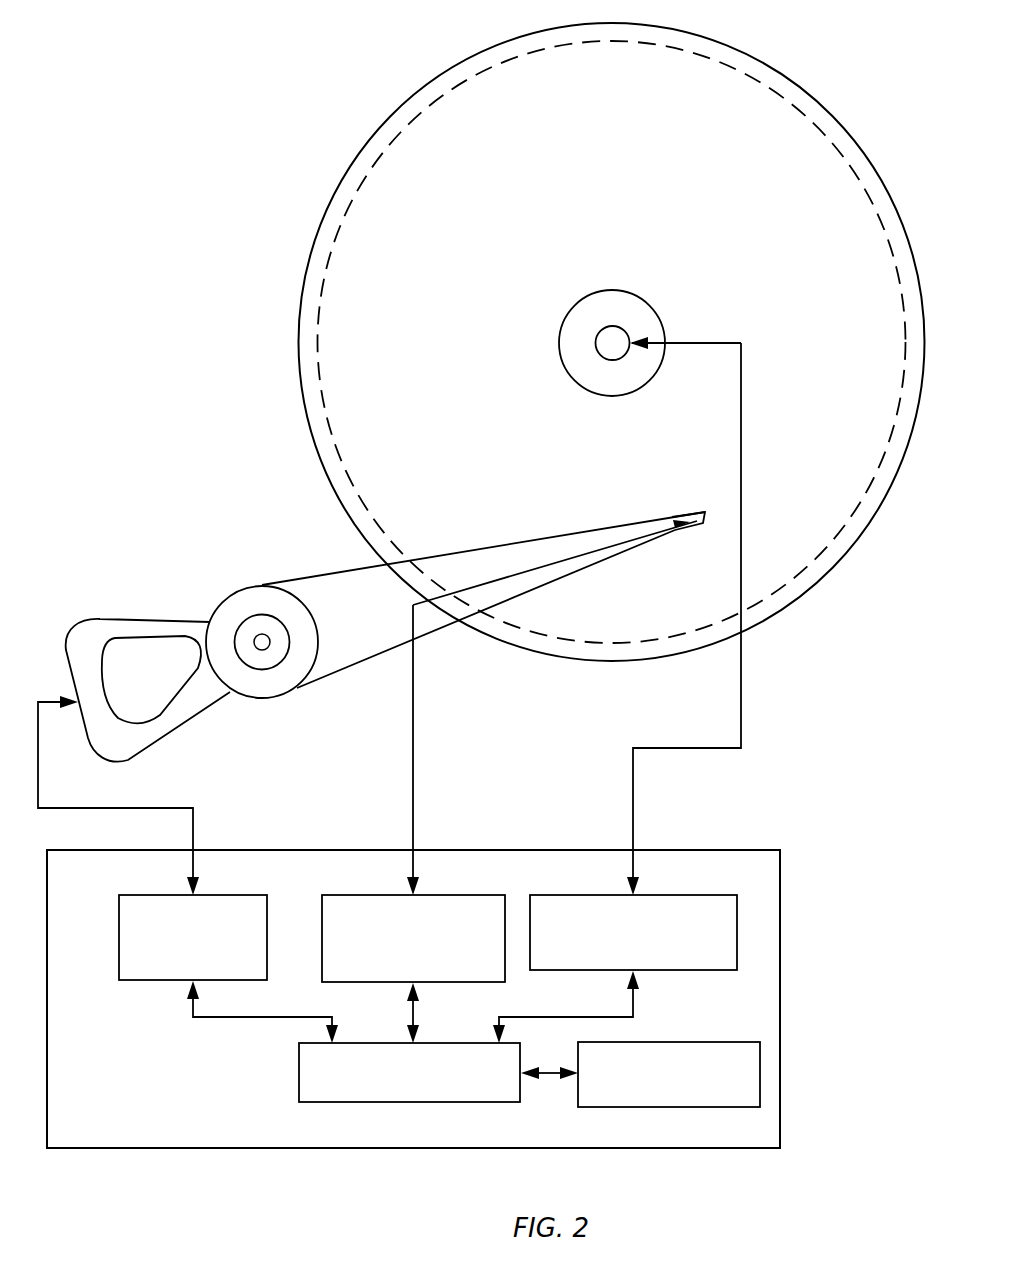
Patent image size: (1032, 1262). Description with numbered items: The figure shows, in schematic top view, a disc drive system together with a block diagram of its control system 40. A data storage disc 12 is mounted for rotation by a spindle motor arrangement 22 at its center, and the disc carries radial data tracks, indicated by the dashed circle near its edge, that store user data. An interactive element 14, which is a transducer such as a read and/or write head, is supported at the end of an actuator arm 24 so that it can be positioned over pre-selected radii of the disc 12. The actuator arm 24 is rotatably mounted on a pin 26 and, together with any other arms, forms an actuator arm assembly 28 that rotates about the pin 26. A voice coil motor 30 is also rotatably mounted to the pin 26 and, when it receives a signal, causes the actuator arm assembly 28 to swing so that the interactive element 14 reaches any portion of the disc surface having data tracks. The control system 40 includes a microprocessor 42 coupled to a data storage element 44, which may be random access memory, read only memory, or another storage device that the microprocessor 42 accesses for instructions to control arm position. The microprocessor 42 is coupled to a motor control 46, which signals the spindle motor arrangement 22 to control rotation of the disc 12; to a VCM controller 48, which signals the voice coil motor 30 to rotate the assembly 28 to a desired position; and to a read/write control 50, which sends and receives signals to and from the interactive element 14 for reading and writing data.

The data storage disc 12 is at (503, 207).
The interactive element 14 is at (697, 523).
The spindle motor arrangement 22 is at (596, 338).
The actuator arm 24 is at (365, 633).
The pin 26 is at (262, 634).
The actuator arm assembly 28 is at (370, 727).
The voice coil motor 30 is at (108, 618).
The control system 40 is at (105, 1130).
The microprocessor 42 is at (396, 1100).
The data storage element 44 is at (736, 1100).
The motor control 46 is at (619, 960).
The VCM controller 48 is at (255, 965).
The read/write control 50 is at (476, 964).